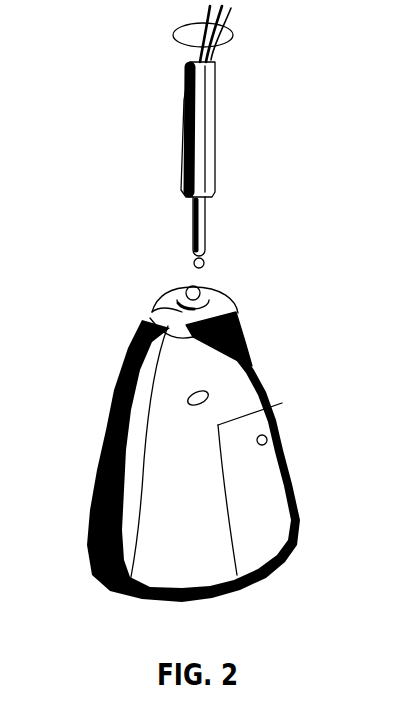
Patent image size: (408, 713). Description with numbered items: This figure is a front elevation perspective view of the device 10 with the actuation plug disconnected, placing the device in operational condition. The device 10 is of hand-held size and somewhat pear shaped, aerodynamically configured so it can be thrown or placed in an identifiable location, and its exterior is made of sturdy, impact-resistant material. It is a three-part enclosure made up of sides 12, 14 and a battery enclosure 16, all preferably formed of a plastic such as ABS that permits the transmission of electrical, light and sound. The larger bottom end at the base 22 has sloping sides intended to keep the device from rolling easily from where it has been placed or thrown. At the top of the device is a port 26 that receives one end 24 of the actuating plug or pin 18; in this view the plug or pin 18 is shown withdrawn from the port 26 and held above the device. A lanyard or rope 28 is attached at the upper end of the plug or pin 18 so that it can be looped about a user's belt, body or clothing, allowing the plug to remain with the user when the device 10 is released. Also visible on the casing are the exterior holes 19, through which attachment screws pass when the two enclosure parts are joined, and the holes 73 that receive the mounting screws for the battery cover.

The device 10 is at (94, 401).
The side 12 is at (125, 362).
The side 14 is at (243, 332).
The battery enclosure 16 is at (272, 475).
The actuating plug or pin 18 is at (216, 125).
The exterior holes 19 is at (207, 394).
The base 22 is at (142, 602).
The end of plug 24 is at (192, 235).
The port 26 is at (172, 310).
The lanyard or rope 28 is at (233, 33).
The holes 73 is at (267, 438).